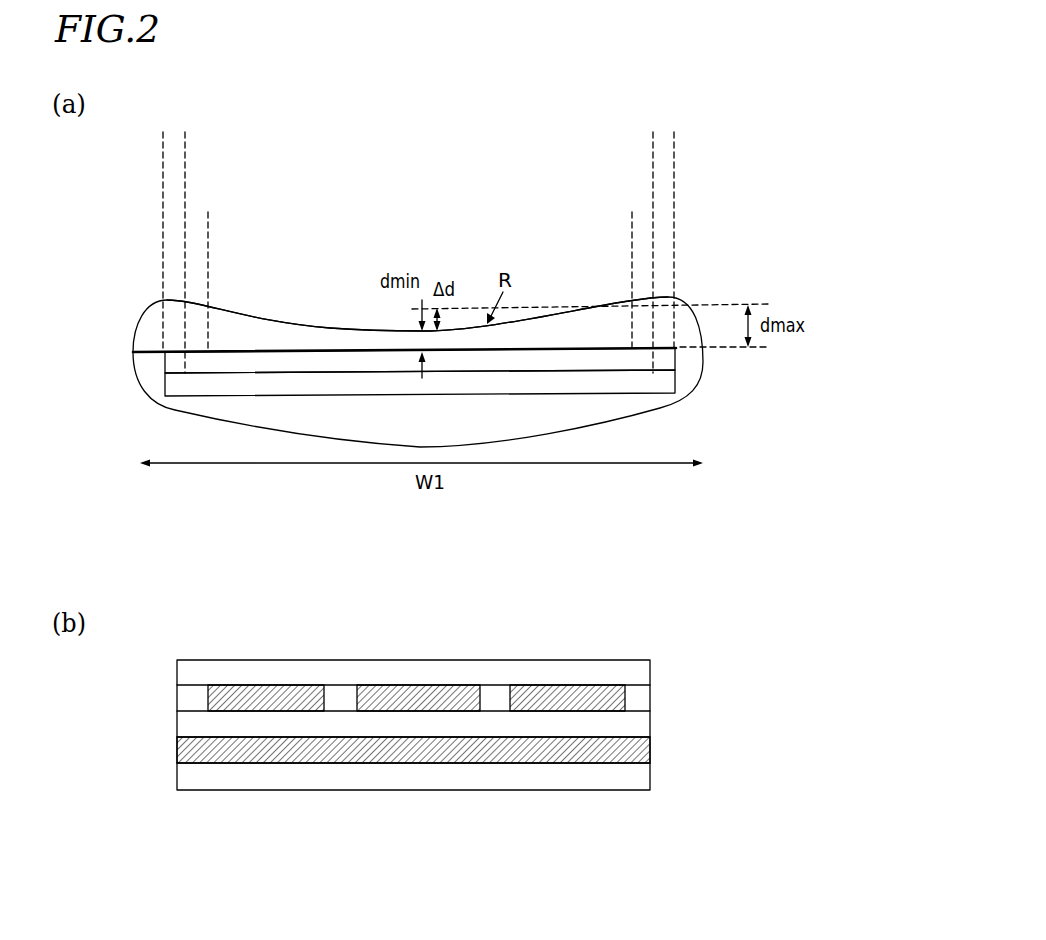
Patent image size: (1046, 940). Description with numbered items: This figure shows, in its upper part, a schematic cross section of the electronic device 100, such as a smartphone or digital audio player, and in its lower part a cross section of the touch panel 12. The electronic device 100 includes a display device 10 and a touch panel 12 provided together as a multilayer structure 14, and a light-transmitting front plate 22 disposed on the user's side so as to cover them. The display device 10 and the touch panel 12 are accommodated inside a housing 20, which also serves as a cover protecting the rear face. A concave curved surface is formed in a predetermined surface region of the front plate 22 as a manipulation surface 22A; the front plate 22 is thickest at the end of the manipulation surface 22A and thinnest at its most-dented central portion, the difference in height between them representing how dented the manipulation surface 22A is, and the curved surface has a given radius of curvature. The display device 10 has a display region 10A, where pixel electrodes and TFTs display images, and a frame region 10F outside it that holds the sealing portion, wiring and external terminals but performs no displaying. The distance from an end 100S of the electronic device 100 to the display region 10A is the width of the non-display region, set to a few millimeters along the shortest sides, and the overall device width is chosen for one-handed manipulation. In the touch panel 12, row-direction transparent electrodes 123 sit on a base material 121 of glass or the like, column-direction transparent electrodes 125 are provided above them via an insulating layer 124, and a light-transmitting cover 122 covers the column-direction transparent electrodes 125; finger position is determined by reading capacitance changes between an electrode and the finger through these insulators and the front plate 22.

The electronic device 100 is at (758, 182).
The end of the electronic device 100S is at (126, 355).
The display device 10 is at (675, 384).
The display region 10A is at (650, 176).
The frame region 10F is at (708, 142).
The touch panel 12 is at (675, 357).
The multilayer structure 14 is at (853, 338).
The housing 20 is at (637, 407).
The front plate 22 is at (682, 292).
The manipulation surface 22A is at (629, 232).
The base material 121 is at (642, 772).
The light-transmitting cover 122 is at (642, 665).
The row-direction transparent electrodes 123 is at (642, 750).
The insulating layer 124 is at (637, 725).
The column-direction transparent electrodes 125 is at (627, 691).